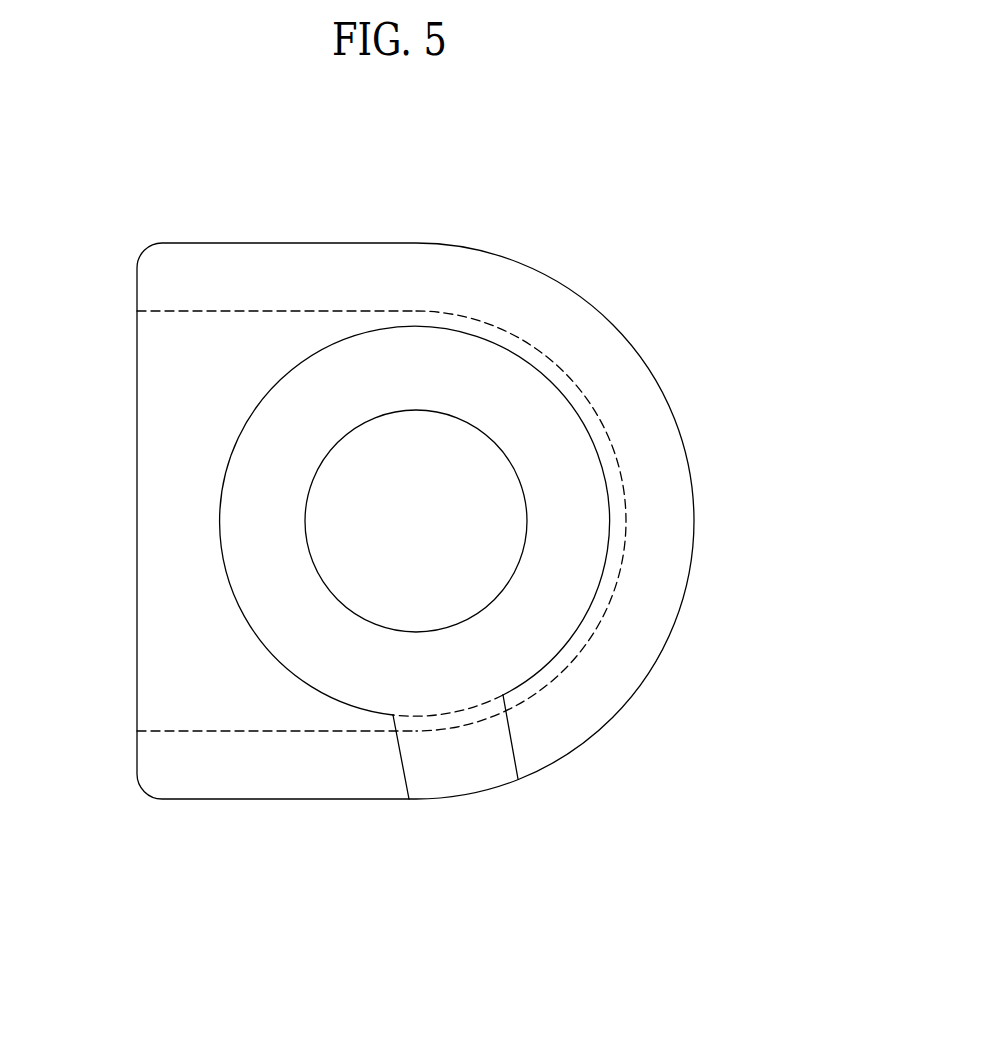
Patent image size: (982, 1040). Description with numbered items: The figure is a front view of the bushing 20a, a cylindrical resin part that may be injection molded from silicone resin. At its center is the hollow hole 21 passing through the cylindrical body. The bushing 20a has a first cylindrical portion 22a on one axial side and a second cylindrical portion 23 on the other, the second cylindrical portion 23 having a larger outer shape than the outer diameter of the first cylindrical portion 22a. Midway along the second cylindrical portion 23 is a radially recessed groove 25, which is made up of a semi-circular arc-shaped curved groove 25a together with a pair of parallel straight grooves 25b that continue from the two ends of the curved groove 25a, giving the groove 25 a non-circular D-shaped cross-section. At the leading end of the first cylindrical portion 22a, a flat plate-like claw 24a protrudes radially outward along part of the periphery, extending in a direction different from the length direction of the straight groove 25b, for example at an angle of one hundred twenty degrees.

The bushing 20a is at (642, 259).
The hollow hole 21 is at (329, 452).
The first cylindrical portion 22a is at (220, 522).
The second cylindrical portion 23 is at (695, 520).
The claw 24a is at (400, 767).
The groove 25 is at (435, 529).
The curved groove 25a is at (620, 466).
The straight grooves 25b is at (252, 311).